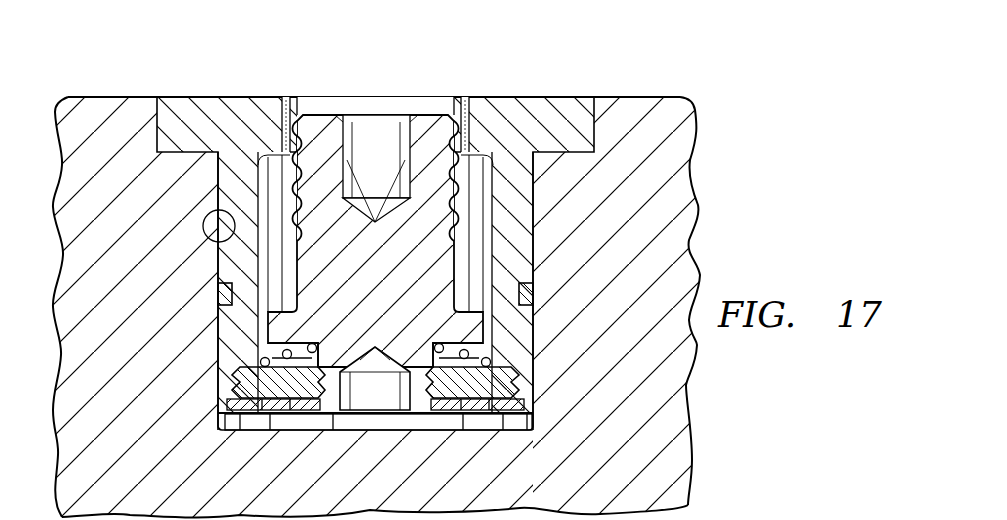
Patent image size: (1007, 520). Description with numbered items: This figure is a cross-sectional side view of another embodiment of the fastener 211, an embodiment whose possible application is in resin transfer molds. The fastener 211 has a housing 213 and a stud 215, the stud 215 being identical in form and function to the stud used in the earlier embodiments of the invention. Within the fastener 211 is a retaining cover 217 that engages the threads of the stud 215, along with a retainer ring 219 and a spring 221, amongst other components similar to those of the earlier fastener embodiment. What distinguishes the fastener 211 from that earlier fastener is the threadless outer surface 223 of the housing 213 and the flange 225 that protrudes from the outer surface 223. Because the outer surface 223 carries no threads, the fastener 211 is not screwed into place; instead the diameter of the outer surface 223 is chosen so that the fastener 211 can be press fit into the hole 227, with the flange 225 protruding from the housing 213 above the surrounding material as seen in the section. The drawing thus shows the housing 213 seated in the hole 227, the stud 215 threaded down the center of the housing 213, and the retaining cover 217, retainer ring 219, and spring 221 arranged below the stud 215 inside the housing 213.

The fastener 211 is at (508, 78).
The housing 213 is at (222, 177).
The stud 215 is at (318, 97).
The retaining cover 217 is at (296, 414).
The retainer ring 219 is at (502, 414).
The spring 221 is at (262, 357).
The threadless outer surface 223 is at (533, 212).
The flange 225 is at (176, 97).
The hole 227 is at (217, 243).